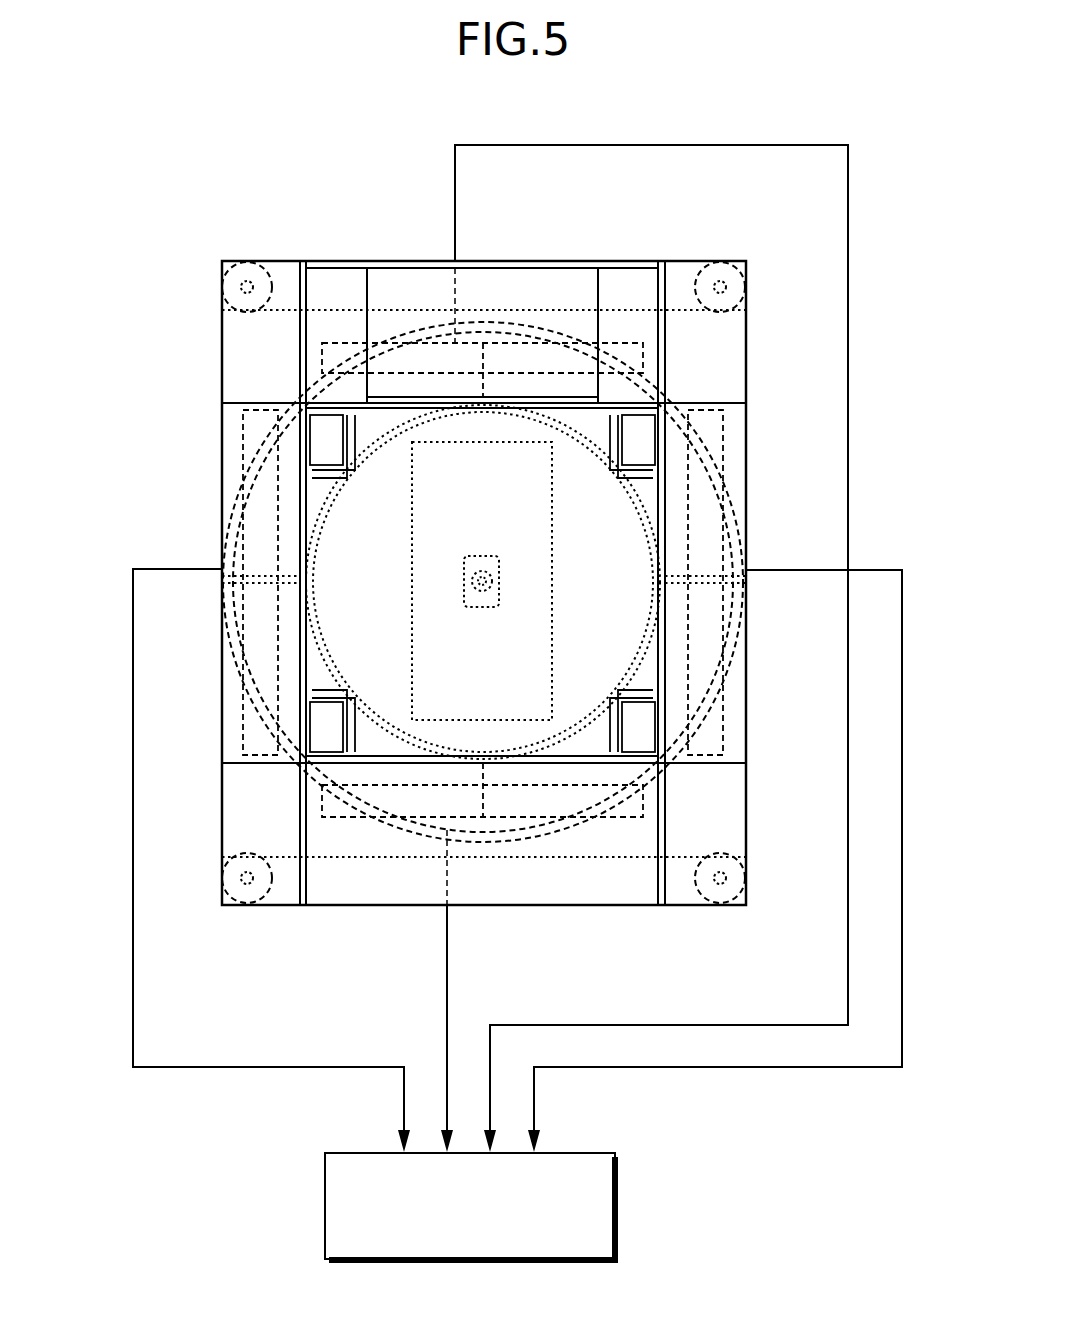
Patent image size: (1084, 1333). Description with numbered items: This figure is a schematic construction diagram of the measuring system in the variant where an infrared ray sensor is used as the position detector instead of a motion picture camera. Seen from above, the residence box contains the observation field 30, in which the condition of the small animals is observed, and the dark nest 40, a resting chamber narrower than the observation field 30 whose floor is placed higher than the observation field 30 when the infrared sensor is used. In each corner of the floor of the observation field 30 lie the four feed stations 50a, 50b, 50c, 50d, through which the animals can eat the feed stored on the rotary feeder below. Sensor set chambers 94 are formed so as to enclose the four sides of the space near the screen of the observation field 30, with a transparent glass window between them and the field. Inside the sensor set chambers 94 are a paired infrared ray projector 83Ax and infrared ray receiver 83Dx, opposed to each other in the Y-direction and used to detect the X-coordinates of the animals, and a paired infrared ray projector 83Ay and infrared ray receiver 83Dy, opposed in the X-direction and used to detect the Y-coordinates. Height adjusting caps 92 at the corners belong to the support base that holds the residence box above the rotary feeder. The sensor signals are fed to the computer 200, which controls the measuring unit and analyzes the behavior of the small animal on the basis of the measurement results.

The observation field 30 is at (570, 579).
The nest 40 is at (500, 282).
The feed station 50a is at (330, 420).
The feed station 50b is at (635, 420).
The feed station 50c is at (640, 745).
The feed station 50d is at (328, 745).
The infrared ray projector 83Ax is at (618, 343).
The infrared ray receiver 83Dx is at (623, 820).
The infrared ray projector 83Ay is at (243, 433).
The infrared ray receiver 83Dy is at (723, 437).
The height adjusting cap 92 is at (222, 288).
The sensor set chamber 94 is at (386, 312).
The computer 200 is at (613, 1213).